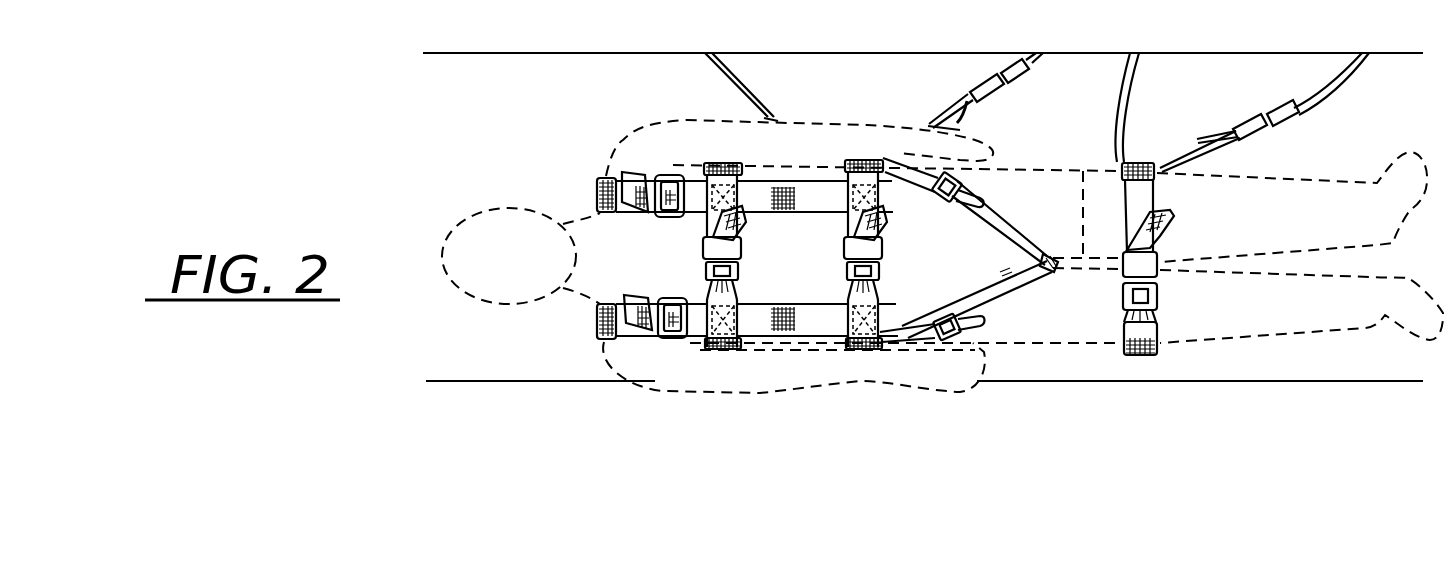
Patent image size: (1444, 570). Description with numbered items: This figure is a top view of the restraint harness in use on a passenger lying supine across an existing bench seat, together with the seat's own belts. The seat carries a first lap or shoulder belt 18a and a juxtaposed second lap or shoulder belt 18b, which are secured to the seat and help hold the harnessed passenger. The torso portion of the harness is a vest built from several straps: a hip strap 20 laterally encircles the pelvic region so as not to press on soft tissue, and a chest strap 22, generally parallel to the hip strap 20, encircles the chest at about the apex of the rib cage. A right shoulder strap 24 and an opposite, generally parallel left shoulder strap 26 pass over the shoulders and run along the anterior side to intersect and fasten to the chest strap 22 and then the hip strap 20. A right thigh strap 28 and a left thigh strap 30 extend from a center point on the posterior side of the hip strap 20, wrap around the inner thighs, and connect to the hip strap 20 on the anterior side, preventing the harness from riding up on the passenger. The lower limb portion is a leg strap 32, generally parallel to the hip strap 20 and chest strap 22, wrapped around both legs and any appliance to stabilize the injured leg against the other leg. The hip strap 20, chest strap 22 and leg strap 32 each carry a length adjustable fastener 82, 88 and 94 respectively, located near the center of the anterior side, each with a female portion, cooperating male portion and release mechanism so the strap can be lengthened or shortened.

The first lap or shoulder belt 18a is at (757, 98).
The second lap or shoulder belt 18b is at (1128, 76).
The hip strap 20 is at (851, 348).
The chest strap 22 is at (711, 348).
The right shoulder strap 24 is at (596, 340).
The left shoulder strap 26 is at (598, 210).
The right thigh strap 28 is at (995, 302).
The left thigh strap 30 is at (994, 223).
The leg strap 32 is at (1156, 352).
The length adjustable fastener 82 is at (880, 267).
The length adjustable fastener 88 is at (738, 266).
The length adjustable fastener 94 is at (1150, 295).